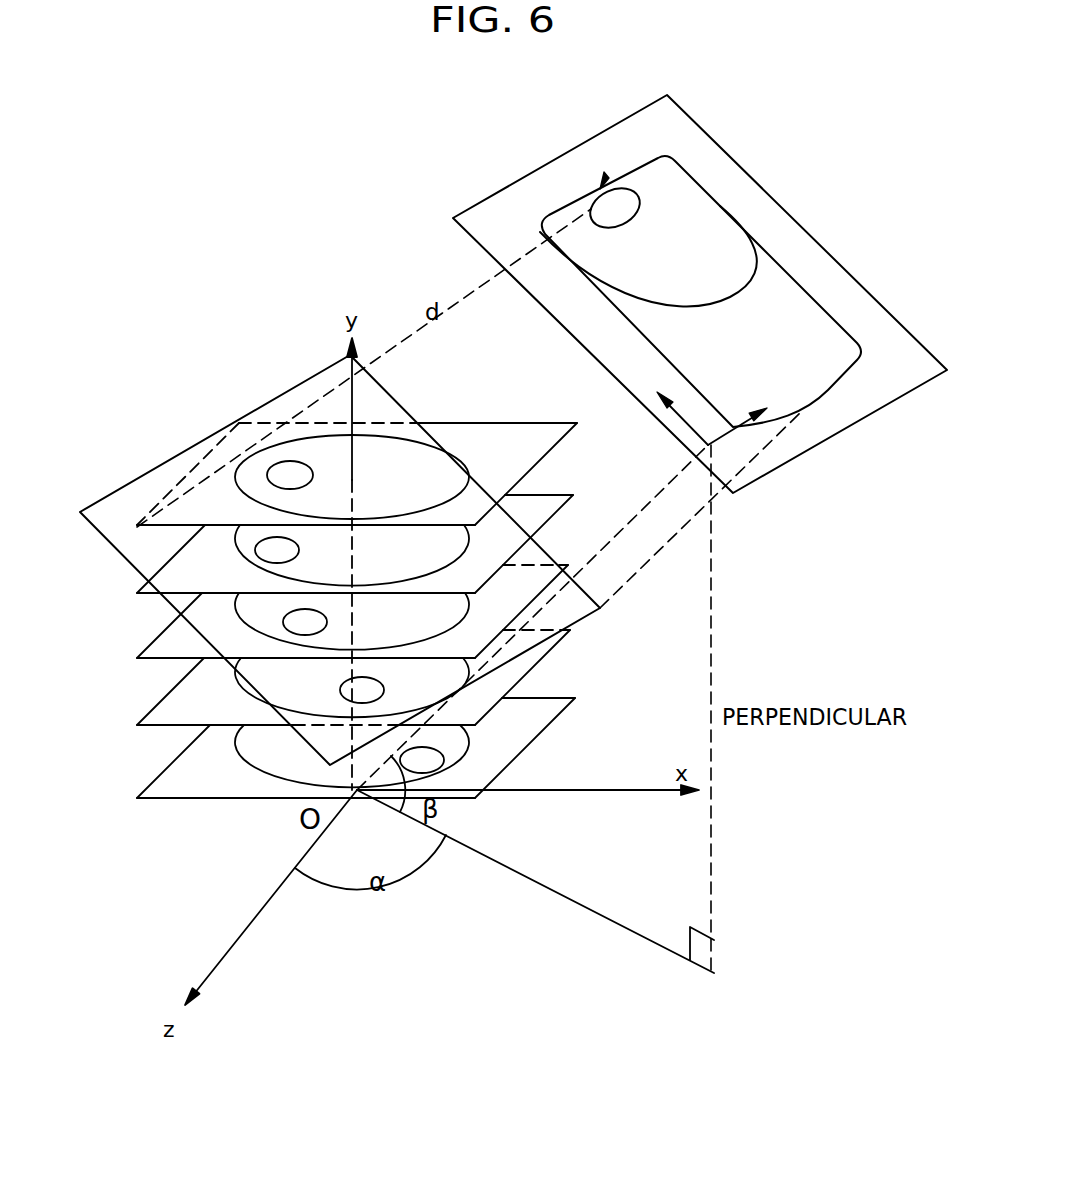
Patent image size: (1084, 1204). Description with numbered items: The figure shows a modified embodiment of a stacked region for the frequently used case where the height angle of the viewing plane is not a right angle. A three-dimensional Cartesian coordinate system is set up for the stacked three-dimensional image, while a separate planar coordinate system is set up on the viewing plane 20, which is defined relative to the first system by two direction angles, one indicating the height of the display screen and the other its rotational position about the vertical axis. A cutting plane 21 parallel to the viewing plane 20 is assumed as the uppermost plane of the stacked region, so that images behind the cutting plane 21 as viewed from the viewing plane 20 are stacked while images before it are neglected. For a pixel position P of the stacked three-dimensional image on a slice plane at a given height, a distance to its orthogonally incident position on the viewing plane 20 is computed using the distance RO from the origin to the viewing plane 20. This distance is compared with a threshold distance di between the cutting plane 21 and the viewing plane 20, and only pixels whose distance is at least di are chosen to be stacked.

The viewing plane 20 is at (755, 183).
The cutting plane 21 is at (133, 566).
The pixel position of stacked three-dimensional image P is at (273, 463).
The distance between origin and viewing plane RO is at (532, 617).
The threshold distance di is at (700, 510).